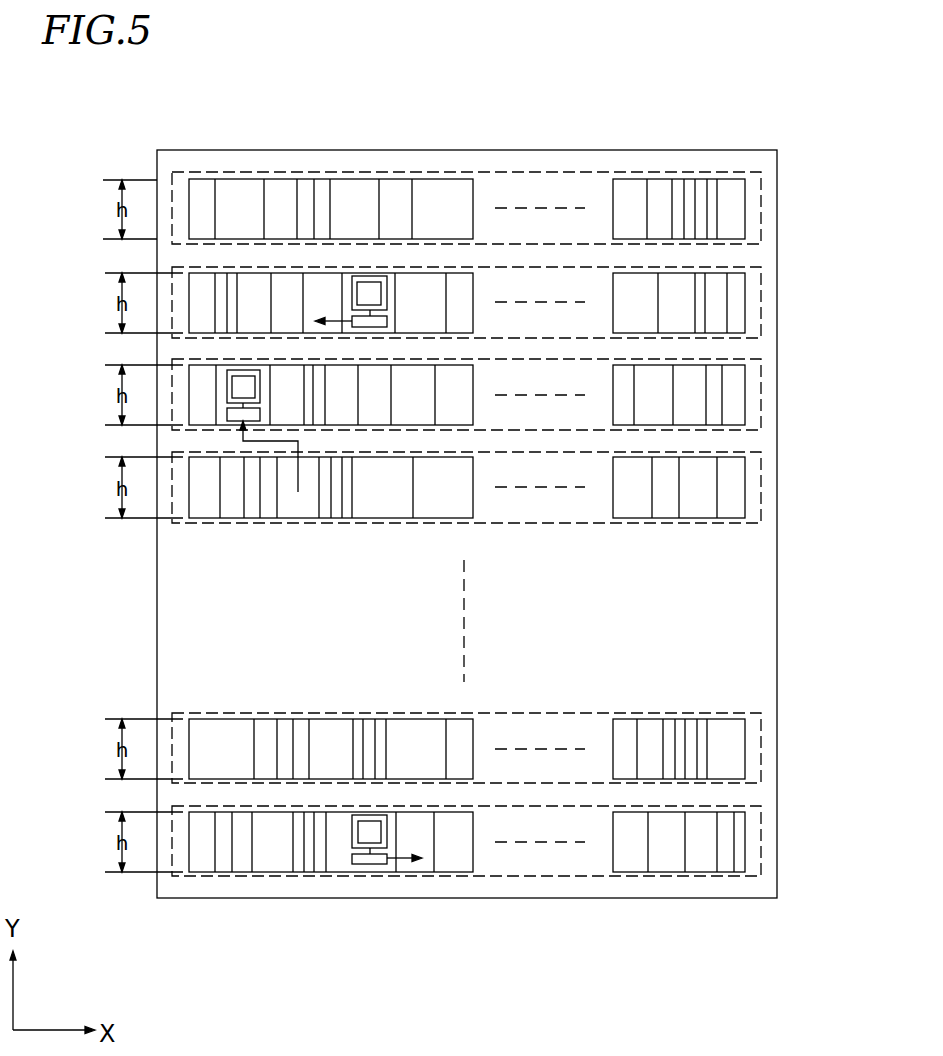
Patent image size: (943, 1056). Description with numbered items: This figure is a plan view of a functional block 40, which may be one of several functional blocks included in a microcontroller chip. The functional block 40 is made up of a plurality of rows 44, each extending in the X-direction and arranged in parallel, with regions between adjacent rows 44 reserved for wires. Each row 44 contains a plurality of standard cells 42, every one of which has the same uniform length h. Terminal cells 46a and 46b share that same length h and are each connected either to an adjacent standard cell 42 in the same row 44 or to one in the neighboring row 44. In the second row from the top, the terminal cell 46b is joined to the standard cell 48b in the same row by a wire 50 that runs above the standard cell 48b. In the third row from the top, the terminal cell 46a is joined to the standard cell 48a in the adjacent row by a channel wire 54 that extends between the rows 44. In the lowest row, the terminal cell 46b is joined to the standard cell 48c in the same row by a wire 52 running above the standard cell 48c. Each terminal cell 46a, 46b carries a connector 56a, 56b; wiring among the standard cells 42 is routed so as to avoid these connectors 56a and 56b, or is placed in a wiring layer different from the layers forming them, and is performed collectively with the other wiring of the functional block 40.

The functional block 40 is at (777, 240).
The standard cell 42 is at (473, 195).
The row 44 is at (531, 172).
The terminal cell 46a is at (255, 363).
The terminal cell 46b is at (380, 278).
The standard cell 48a is at (289, 510).
The standard cell 48b is at (327, 281).
The standard cell 48c is at (427, 863).
The wire 50 is at (347, 327).
The wire 52 is at (380, 860).
The channel wire 54 is at (247, 441).
The connector 56a is at (238, 387).
The connector 56b is at (373, 295).